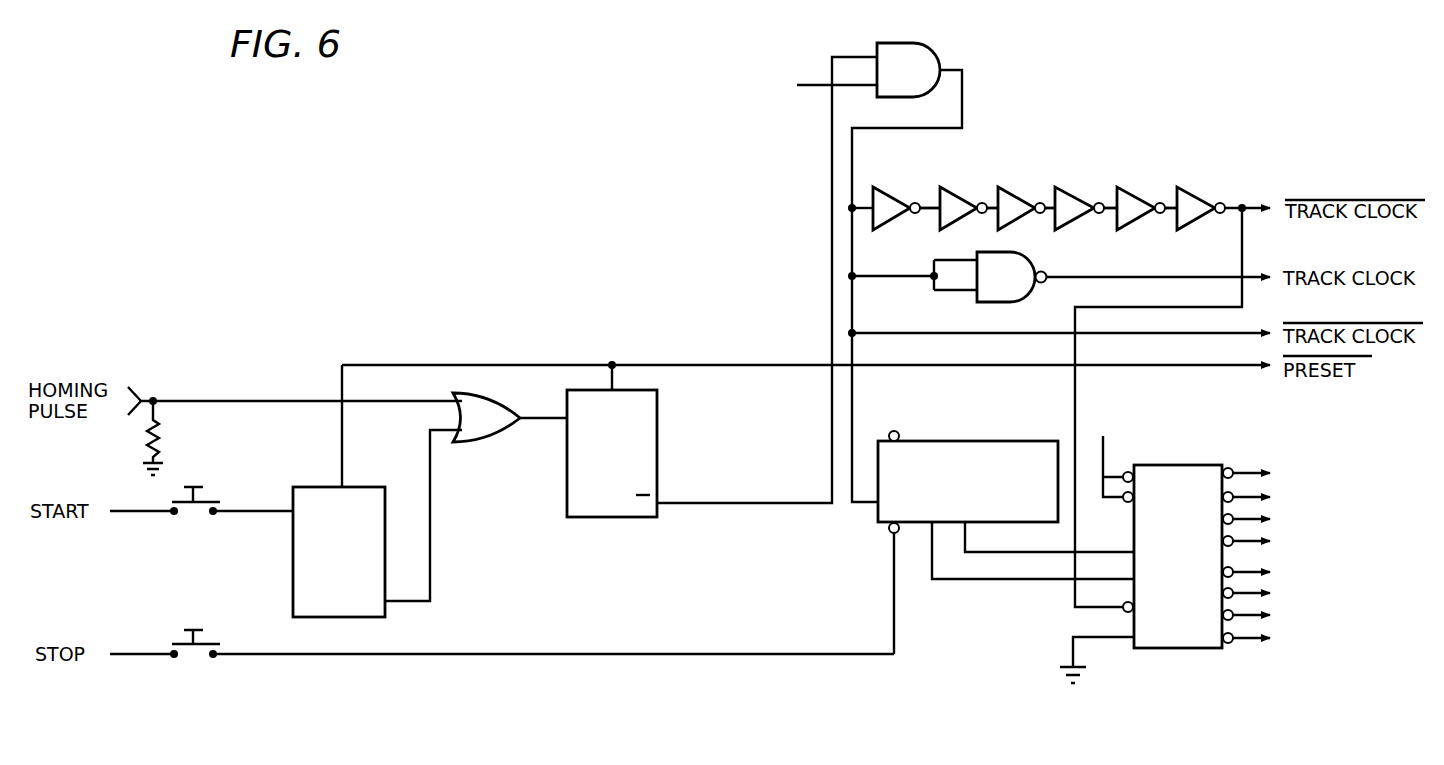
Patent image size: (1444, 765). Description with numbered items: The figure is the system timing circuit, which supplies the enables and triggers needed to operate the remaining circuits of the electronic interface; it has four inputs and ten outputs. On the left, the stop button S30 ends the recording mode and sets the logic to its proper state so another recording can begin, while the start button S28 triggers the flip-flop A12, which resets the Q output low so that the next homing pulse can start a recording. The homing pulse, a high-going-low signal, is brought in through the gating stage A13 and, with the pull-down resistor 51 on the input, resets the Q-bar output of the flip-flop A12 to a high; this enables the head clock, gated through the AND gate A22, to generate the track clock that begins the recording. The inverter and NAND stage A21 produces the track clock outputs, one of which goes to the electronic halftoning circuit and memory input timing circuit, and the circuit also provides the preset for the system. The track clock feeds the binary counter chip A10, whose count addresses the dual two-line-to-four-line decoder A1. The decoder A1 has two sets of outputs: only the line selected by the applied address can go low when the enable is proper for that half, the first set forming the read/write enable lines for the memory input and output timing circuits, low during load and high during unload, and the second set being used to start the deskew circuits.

The resistor (51 ohm) 51 is at (173, 438).
The start button S28 is at (201, 487).
The stop button S30 is at (502, 633).
The flip-flop A12 is at (575, 337).
The OR gate A13 is at (497, 405).
The AND gate A22 is at (879, 260).
The NAND gate / inverter chain A21 is at (1059, 257).
The binary counter chip A10 is at (995, 542).
The dual 2-line-to-4-line decoder A1 is at (1233, 548).